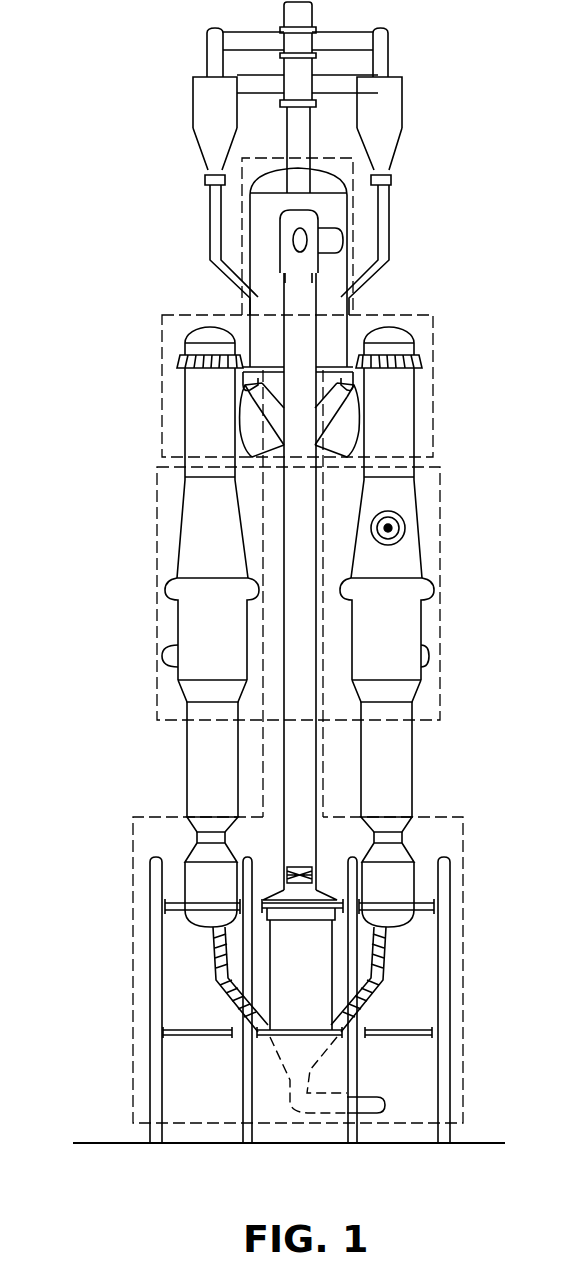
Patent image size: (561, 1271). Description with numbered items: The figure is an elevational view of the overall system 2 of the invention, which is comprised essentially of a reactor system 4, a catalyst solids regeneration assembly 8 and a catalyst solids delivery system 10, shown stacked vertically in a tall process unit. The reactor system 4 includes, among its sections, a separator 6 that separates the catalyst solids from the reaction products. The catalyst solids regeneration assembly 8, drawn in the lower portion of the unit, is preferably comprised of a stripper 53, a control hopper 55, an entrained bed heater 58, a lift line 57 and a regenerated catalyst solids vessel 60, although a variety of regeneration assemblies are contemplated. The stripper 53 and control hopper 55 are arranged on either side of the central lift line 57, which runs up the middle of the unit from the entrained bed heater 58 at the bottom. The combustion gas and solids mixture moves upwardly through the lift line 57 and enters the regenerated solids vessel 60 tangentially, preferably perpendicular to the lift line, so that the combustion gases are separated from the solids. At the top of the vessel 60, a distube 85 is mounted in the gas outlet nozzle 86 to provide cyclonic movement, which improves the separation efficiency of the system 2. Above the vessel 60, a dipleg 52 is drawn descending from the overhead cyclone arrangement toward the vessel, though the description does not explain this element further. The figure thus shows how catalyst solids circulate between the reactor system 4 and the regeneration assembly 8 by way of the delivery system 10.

The system 2 is at (127, 421).
The reactor system 4 is at (298, 503).
The separator 6 is at (299, 692).
The catalyst solids regeneration assembly 8 is at (140, 570).
The catalyst solids delivery system 10 is at (433, 390).
The cyclone dipleg 52 is at (380, 212).
The stripper 53 is at (197, 765).
The control hopper 55 is at (299, 924).
The lift line 57 is at (300, 581).
The entrained bed heater 58 is at (323, 1001).
The regenerated catalyst solids vessel 60 is at (300, 333).
The distube 85 is at (295, 180).
The gas outlet nozzle 86 is at (308, 203).